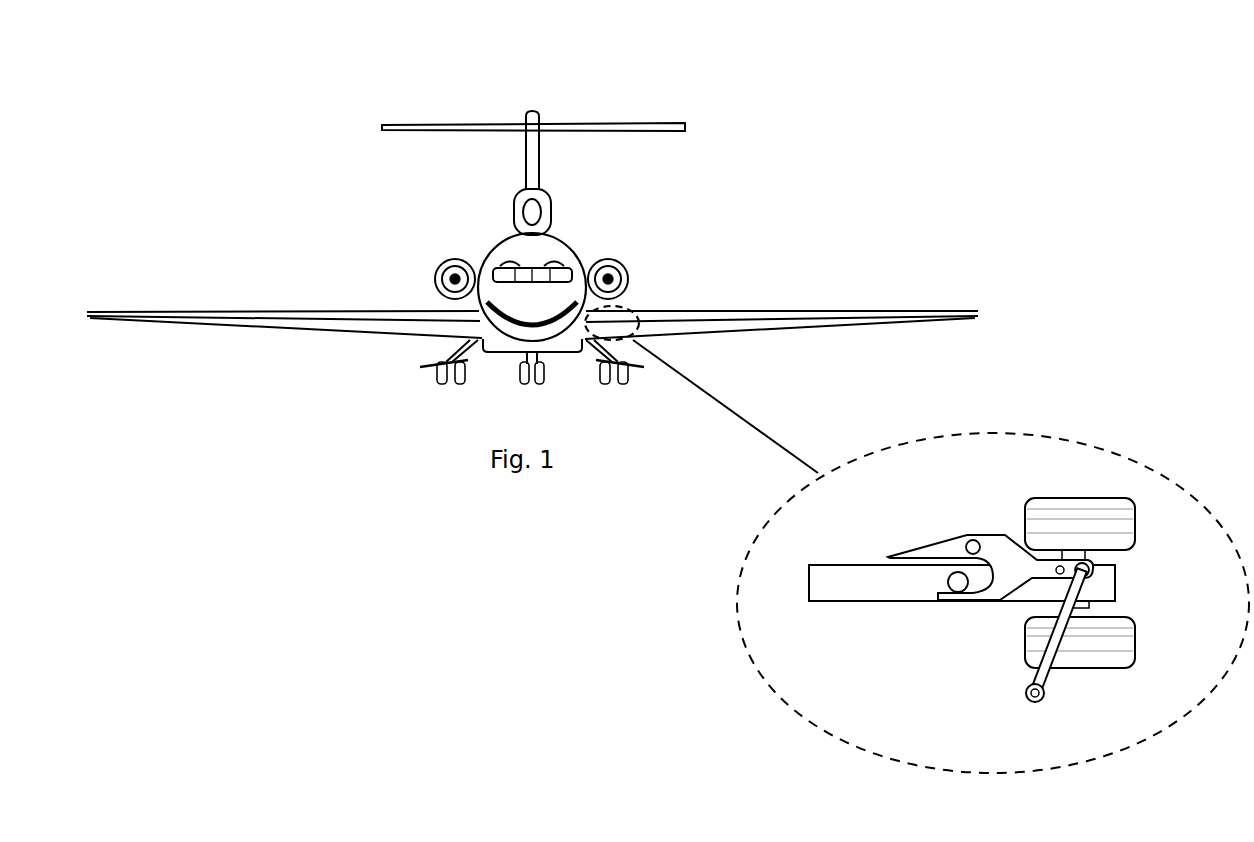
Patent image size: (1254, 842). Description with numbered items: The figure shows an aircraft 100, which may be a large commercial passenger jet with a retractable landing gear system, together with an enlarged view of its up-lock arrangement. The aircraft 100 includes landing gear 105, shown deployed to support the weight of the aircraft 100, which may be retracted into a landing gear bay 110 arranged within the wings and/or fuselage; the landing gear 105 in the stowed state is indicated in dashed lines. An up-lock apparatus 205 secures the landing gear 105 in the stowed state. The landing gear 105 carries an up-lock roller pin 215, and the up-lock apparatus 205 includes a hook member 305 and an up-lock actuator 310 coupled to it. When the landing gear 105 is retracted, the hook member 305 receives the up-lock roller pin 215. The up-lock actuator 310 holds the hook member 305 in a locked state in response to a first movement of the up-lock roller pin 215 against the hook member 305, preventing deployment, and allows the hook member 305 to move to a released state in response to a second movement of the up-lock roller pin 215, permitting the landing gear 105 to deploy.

The aircraft 100 is at (301, 103).
The landing gear 105 is at (638, 386).
The landing gear bay 110 is at (637, 309).
The up-lock apparatus 205 is at (928, 523).
The up-lock roller pin 215 is at (950, 580).
The hook member 305 is at (1002, 543).
The up-lock actuator 310 is at (1052, 652).